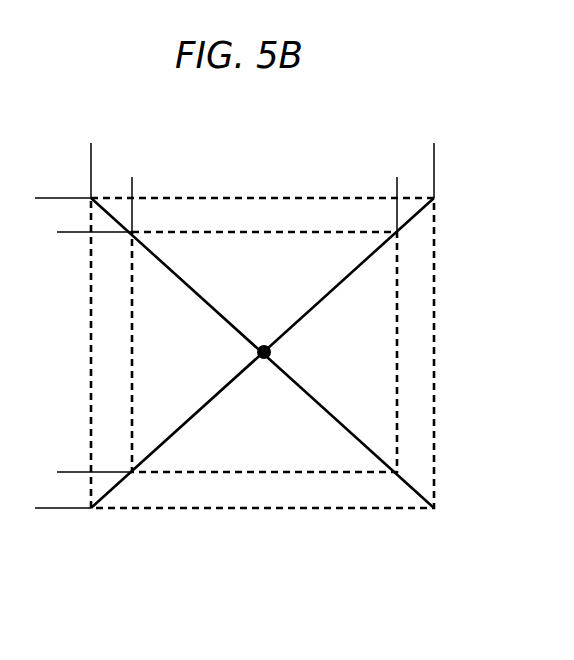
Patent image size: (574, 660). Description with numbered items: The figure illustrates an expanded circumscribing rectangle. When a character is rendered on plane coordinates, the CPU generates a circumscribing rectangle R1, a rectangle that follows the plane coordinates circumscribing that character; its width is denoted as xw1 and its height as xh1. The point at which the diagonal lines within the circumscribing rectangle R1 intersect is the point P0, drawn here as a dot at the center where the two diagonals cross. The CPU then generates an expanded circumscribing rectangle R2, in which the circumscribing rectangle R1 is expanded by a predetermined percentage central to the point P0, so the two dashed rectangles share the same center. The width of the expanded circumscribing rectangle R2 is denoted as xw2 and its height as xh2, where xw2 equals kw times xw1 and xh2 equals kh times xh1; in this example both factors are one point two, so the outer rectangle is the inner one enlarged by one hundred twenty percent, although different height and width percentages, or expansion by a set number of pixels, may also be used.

The expanded circumscribing rectangle R2 is at (183, 508).
The circumscribing rectangle R1 is at (272, 472).
The point P0 is at (270, 350).
The width of the expanded circumscribing rectangle xw2 is at (434, 152).
The width of the circumscribing rectangle xw1 is at (397, 188).
The height of the expanded circumscribing rectangle xh2 is at (42, 198).
The height of the circumscribing rectangle xh1 is at (76, 232).